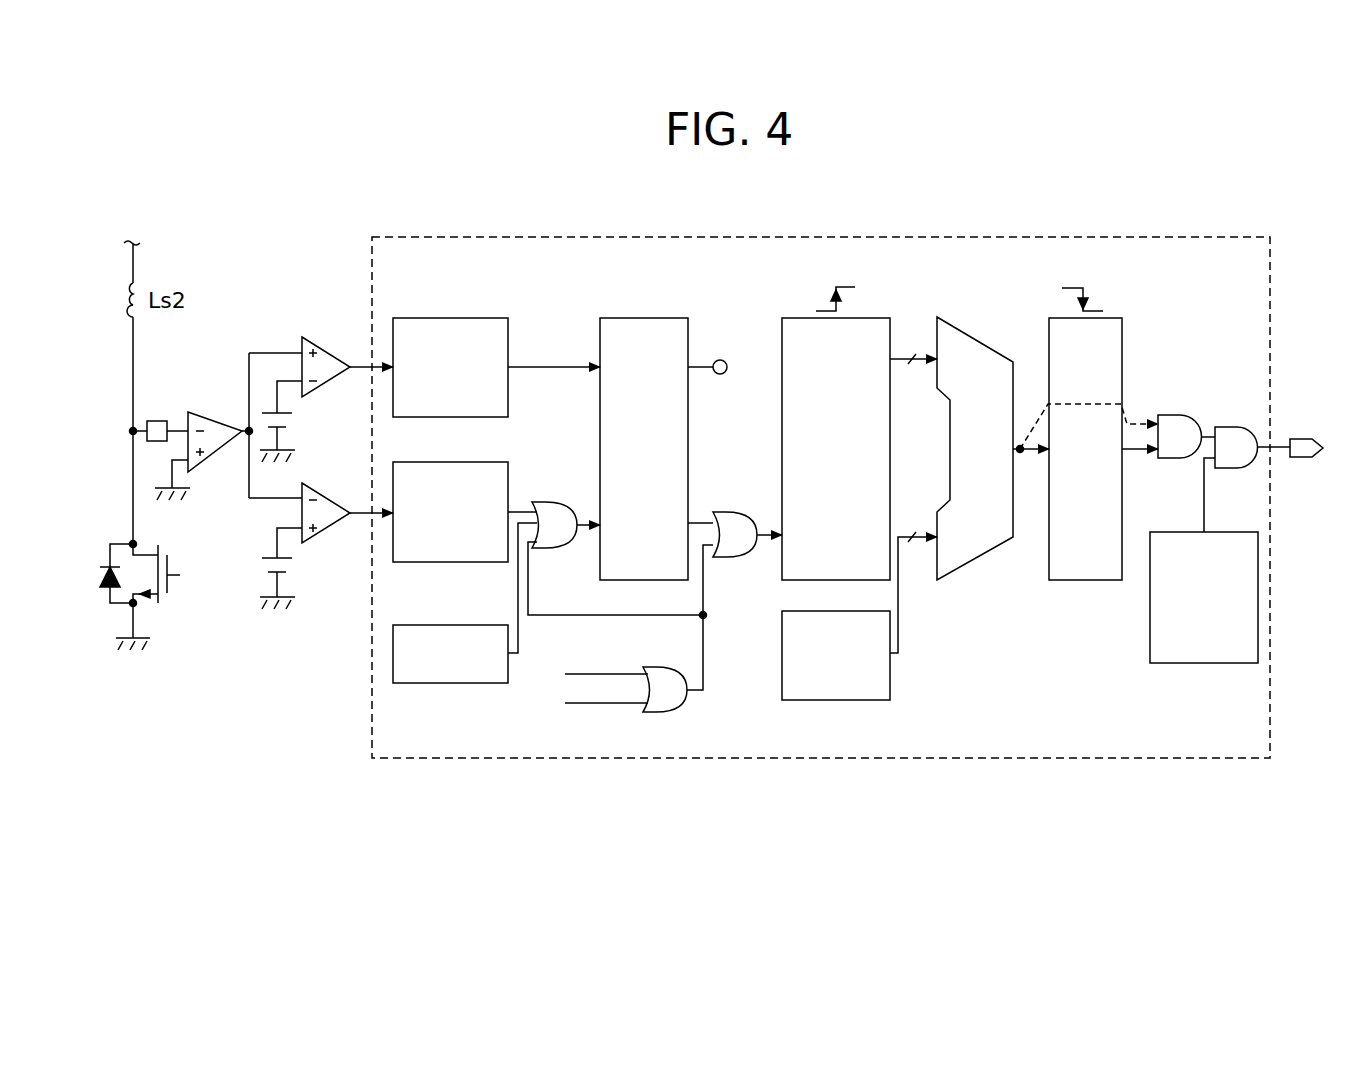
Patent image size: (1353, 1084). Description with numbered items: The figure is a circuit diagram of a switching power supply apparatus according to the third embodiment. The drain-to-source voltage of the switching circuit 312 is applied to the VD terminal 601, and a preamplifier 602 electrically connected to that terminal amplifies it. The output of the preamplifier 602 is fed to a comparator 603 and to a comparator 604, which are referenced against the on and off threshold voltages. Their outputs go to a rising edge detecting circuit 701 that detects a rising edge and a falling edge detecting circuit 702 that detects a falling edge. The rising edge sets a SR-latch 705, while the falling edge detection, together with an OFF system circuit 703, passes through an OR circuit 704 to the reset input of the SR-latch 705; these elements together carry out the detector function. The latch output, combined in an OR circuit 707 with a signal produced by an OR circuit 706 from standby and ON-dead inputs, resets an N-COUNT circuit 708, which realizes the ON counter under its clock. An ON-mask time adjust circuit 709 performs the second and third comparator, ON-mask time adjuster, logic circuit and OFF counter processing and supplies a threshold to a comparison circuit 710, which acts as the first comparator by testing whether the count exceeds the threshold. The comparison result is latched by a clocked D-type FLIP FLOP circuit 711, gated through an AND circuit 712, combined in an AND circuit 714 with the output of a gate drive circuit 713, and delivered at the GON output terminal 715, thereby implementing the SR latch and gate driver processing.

The switching circuit 312 is at (103, 592).
The VD terminal 601 is at (158, 421).
The preamplifier 602 is at (215, 412).
The comparator 603 is at (324, 350).
The comparator 604 is at (327, 496).
The rising edge detecting circuit 701 is at (481, 318).
The falling edge detecting circuit 702 is at (500, 462).
The OFF system circuit 703 is at (458, 625).
The OR circuit 704 is at (554, 500).
The SR-latch 705 is at (652, 318).
The OR circuit 706 is at (686, 705).
The OR circuit 707 is at (733, 512).
The N-COUNT circuit 708 is at (878, 318).
The ON-mask time adjust circuit 709 is at (892, 680).
The comparison circuit 710 is at (988, 552).
The D-type FLIP FLOP circuit 711 is at (1083, 580).
The AND circuit 712 is at (1172, 414).
The gate drive circuit 713 is at (1200, 663).
The AND circuit 714 is at (1233, 426).
The GON output terminal 715 is at (1305, 438).